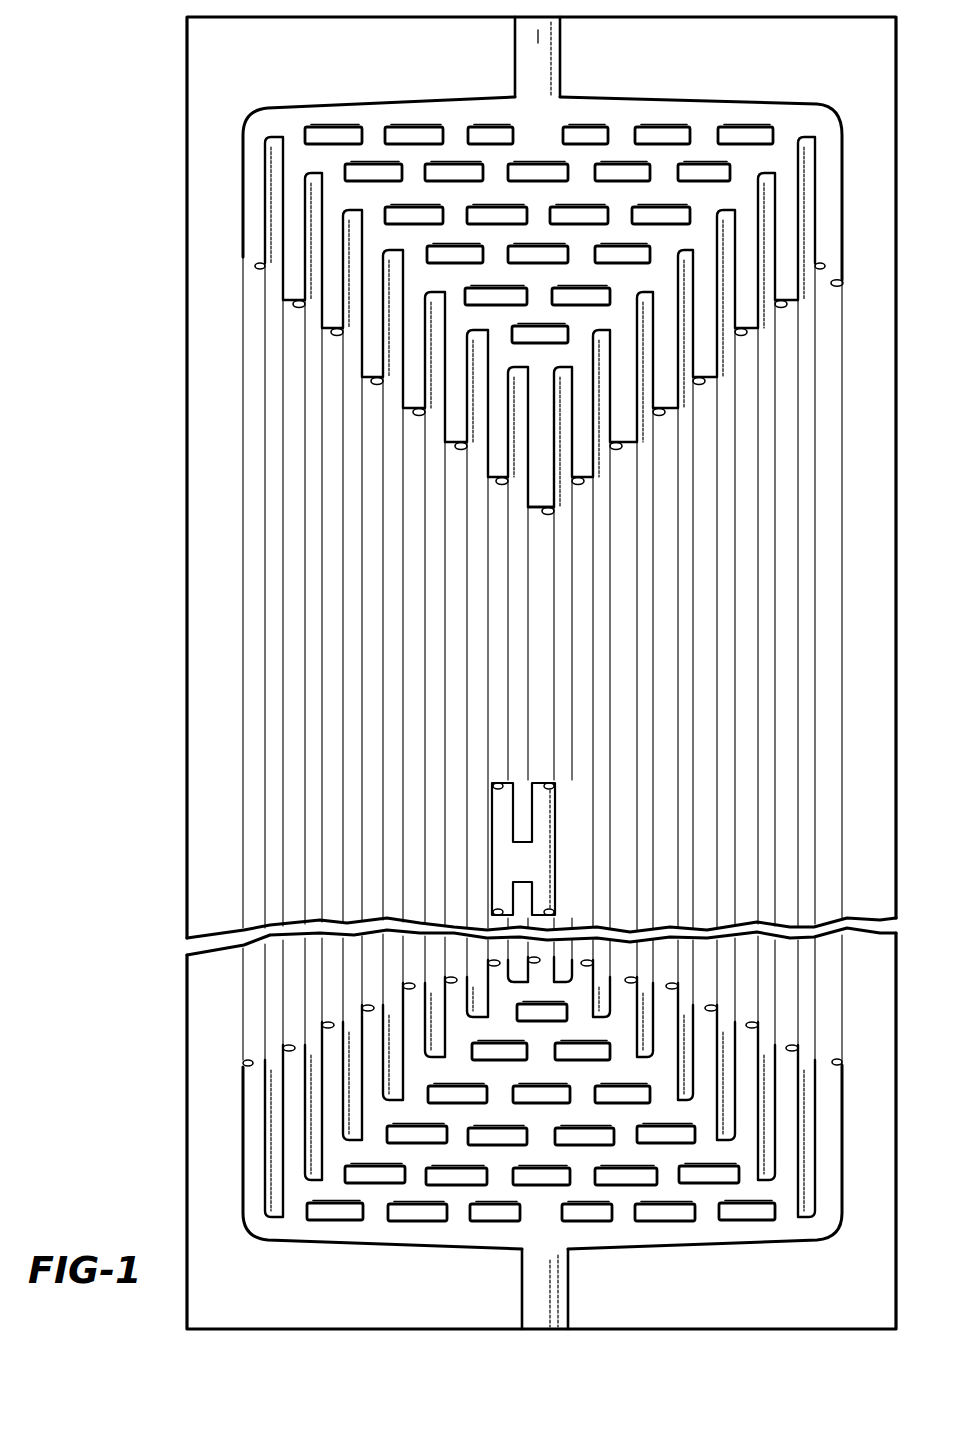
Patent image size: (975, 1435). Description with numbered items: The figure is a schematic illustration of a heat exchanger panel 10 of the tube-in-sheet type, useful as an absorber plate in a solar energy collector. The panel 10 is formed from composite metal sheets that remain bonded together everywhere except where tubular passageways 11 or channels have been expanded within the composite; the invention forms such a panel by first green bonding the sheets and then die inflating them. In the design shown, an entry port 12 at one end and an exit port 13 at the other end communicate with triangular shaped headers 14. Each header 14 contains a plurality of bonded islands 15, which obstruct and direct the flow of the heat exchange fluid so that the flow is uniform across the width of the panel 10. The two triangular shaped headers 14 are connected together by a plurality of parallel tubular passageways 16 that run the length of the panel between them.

The heat exchanger panel 10 is at (171, 66).
The tubular passageways 11 is at (822, 98).
The entry port 12 is at (534, 1318).
The exit port 13 is at (534, 33).
The triangular shaped headers 14 is at (710, 126).
The bonded islands 15 is at (592, 128).
The parallel tubular passageways 16 is at (830, 236).